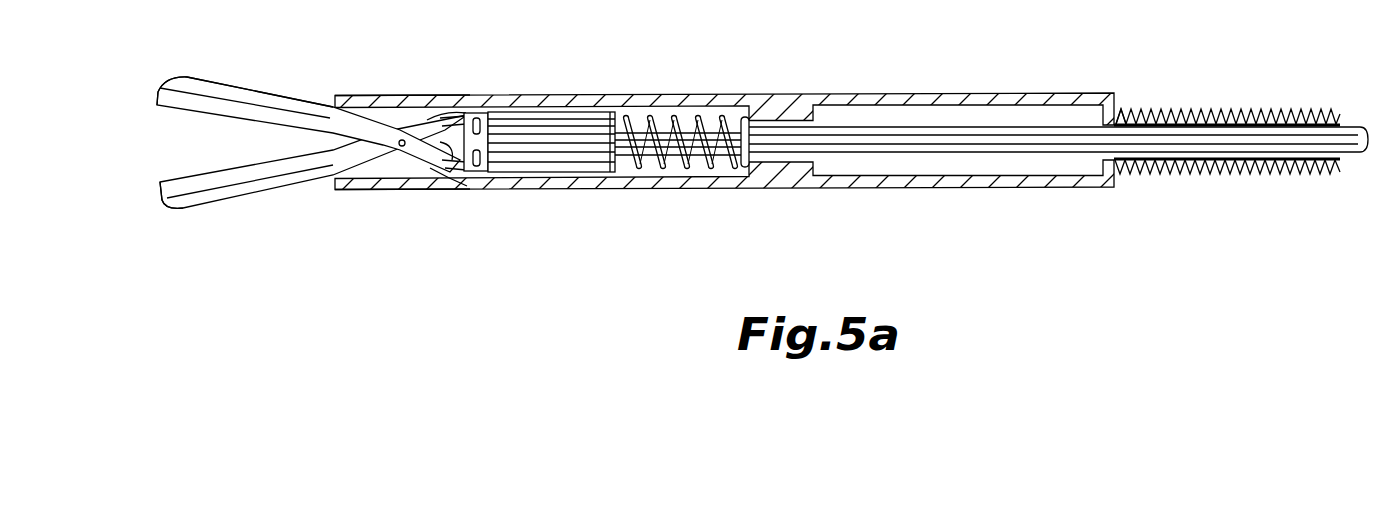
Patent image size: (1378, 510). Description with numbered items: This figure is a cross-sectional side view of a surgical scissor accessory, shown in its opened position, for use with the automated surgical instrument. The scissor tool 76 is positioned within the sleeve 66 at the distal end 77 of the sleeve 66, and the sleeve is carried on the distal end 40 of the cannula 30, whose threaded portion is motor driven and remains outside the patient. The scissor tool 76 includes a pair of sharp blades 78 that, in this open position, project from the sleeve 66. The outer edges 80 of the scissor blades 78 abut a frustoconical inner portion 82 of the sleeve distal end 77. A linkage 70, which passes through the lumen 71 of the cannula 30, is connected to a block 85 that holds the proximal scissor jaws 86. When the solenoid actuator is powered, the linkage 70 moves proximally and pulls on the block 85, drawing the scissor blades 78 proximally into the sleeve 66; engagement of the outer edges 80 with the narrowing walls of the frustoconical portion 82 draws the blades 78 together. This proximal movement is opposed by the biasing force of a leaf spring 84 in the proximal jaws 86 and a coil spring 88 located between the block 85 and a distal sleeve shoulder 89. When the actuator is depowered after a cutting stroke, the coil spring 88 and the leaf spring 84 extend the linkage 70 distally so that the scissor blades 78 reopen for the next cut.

The cannula 30 is at (1286, 97).
The distal end 40 is at (1127, 118).
The sleeve 66 is at (770, 94).
The linkage 70 is at (1170, 137).
The lumen 71 is at (1297, 170).
The scissor tool 76 is at (269, 78).
The distal end of the sleeve 77 is at (386, 83).
The scissor blades 78 is at (162, 90).
The outer edges 80 is at (312, 100).
The frustoconical inner portion 82 is at (350, 190).
The leaf spring 84 is at (468, 172).
The block 85 is at (560, 147).
The proximal scissor jaws 86 is at (440, 123).
The coil spring 88 is at (643, 157).
The distal sleeve shoulder 89 is at (744, 170).